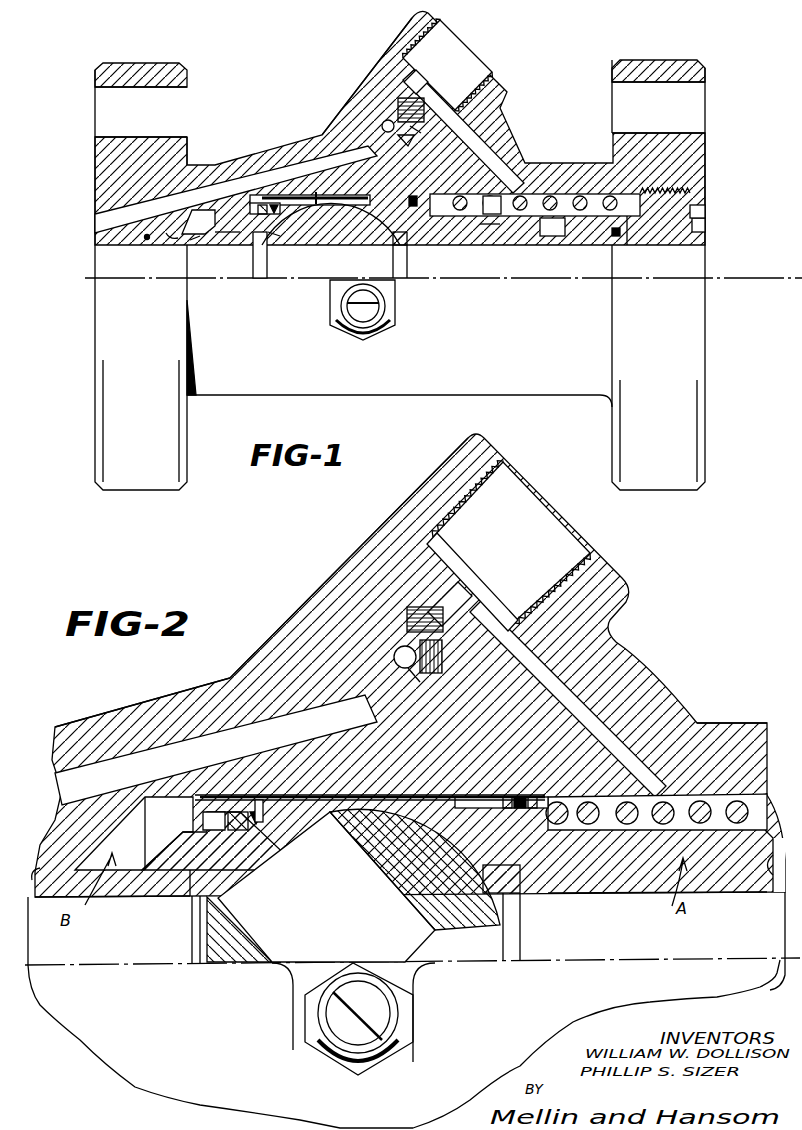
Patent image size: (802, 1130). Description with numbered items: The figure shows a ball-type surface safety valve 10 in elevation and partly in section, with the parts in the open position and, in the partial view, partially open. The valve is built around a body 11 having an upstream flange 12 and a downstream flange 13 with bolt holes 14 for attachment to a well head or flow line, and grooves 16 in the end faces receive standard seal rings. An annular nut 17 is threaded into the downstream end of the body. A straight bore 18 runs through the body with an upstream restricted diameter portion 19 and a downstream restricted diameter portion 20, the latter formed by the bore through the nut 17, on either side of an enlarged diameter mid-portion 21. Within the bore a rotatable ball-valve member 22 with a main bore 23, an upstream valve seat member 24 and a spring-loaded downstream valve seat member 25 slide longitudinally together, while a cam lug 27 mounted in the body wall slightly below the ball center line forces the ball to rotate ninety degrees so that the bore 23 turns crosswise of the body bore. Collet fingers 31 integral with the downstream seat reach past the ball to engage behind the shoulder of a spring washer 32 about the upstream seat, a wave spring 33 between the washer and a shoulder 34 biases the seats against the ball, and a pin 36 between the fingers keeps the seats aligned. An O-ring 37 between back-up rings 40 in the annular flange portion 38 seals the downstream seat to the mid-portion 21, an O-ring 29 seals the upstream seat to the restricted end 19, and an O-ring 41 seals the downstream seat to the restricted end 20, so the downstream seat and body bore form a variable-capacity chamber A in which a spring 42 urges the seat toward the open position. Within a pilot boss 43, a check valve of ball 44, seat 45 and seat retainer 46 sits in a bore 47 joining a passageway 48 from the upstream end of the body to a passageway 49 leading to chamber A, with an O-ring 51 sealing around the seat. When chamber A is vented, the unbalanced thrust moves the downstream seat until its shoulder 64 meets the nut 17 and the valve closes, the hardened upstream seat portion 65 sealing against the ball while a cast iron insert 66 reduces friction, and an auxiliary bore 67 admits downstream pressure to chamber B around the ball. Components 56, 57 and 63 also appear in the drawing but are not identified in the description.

In FIG. 2, the ball-type surface safety valve 10 is at (292, 612).
In FIG. 1, the body 11 is at (262, 142).
In FIG. 2, the body 11 is at (242, 683).
In FIG. 1, the upstream flange 12 is at (136, 63).
In FIG. 1, the downstream flange 13 is at (688, 66).
In FIG. 1, the bolt holes 14 is at (97, 110).
In FIG. 1, the grooves 16 is at (702, 184).
In FIG. 1, the annular nut 17 is at (705, 228).
In FIG. 1, the straight bore 18 is at (566, 205).
In FIG. 2, the straight bore 18 is at (610, 806).
In FIG. 1, the upstream restricted diameter portion 19 is at (170, 236).
In FIG. 2, the upstream restricted diameter portion 19 is at (36, 868).
In FIG. 1, the downstream restricted diameter portion 20 is at (630, 240).
In FIG. 1, the enlarged diameter mid-portion 21 is at (597, 208).
In FIG. 2, the enlarged diameter mid-portion 21 is at (692, 800).
In FIG. 1, the rotatable ball-valve member 22 is at (316, 194).
In FIG. 2, the rotatable ball-valve member 22 is at (238, 946).
In FIG. 1, the main bore 23 is at (256, 262).
In FIG. 2, the main bore 23 is at (326, 887).
In FIG. 1, the upstream valve seat member 24 is at (196, 240).
In FIG. 2, the upstream valve seat member 24 is at (134, 903).
In FIG. 1, the spring-loaded downstream valve seat member 25 is at (498, 239).
In FIG. 2, the spring-loaded downstream valve seat member 25 is at (626, 897).
In FIG. 1, the cam lug 27 is at (335, 326).
In FIG. 2, the cam lug 27 is at (305, 1050).
In FIG. 1, the O-ring 29 is at (146, 240).
In FIG. 1, the collet fingers 31 is at (258, 204).
In FIG. 2, the collet fingers 31 is at (212, 812).
In FIG. 1, the spring washer 32 is at (262, 204).
In FIG. 2, the spring washer 32 is at (238, 812).
In FIG. 1, the wave spring 33 is at (273, 204).
In FIG. 2, the wave spring 33 is at (256, 812).
In FIG. 1, the shoulder 34 is at (272, 238).
In FIG. 2, the shoulder 34 is at (217, 841).
In FIG. 2, the pin 36 is at (263, 800).
In FIG. 1, the O-ring 37 is at (413, 196).
In FIG. 2, the O-ring 37 is at (520, 797).
In FIG. 1, the annular flange portion 38 is at (432, 198).
In FIG. 2, the annular flange portion 38 is at (488, 800).
In FIG. 2, the back-up rings 40 is at (506, 797).
In FIG. 1, the O-ring 41 is at (616, 238).
In FIG. 1, the spring 42 is at (546, 206).
In FIG. 2, the spring 42 is at (745, 800).
In FIG. 1, the pilot boss 43 is at (397, 42).
In FIG. 2, the pilot boss 43 is at (423, 484).
In FIG. 1, the ball 44 is at (383, 122).
In FIG. 2, the ball 44 is at (398, 650).
In FIG. 1, the seat 45 is at (400, 140).
In FIG. 2, the seat 45 is at (421, 674).
In FIG. 1, the seat retainer 46 is at (400, 107).
In FIG. 1, the bore 47 is at (413, 131).
In FIG. 2, the bore 47 is at (445, 660).
In FIG. 1, the passageway 48 is at (108, 216).
In FIG. 2, the passageway 48 is at (95, 765).
In FIG. 1, the passageway 49 is at (478, 152).
In FIG. 2, the passageway 49 is at (577, 712).
In FIG. 1, the O-ring 51 is at (408, 95).
In FIG. 2, the O-ring 51 is at (418, 622).
In FIG. 1, the screw head 56 is at (360, 310).
In FIG. 2, the screw head 56 is at (386, 1028).
In FIG. 1, the screw slot 57 is at (372, 306).
In FIG. 2, the screw slot 57 is at (348, 1040).
In FIG. 1, the plug 63 is at (440, 36).
In FIG. 2, the plug 63 is at (514, 482).
In FIG. 1, the shoulder 64 is at (558, 237).
In FIG. 2, the shoulder 64 is at (775, 880).
In FIG. 1, the hardened upstream seat portion 65 is at (218, 234).
In FIG. 2, the hardened upstream seat portion 65 is at (193, 895).
In FIG. 1, the cast iron insert 66 is at (405, 242).
In FIG. 2, the cast iron insert 66 is at (518, 880).
In FIG. 1, the auxiliary bore 67 is at (345, 234).
In FIG. 2, the auxiliary bore 67 is at (440, 930).